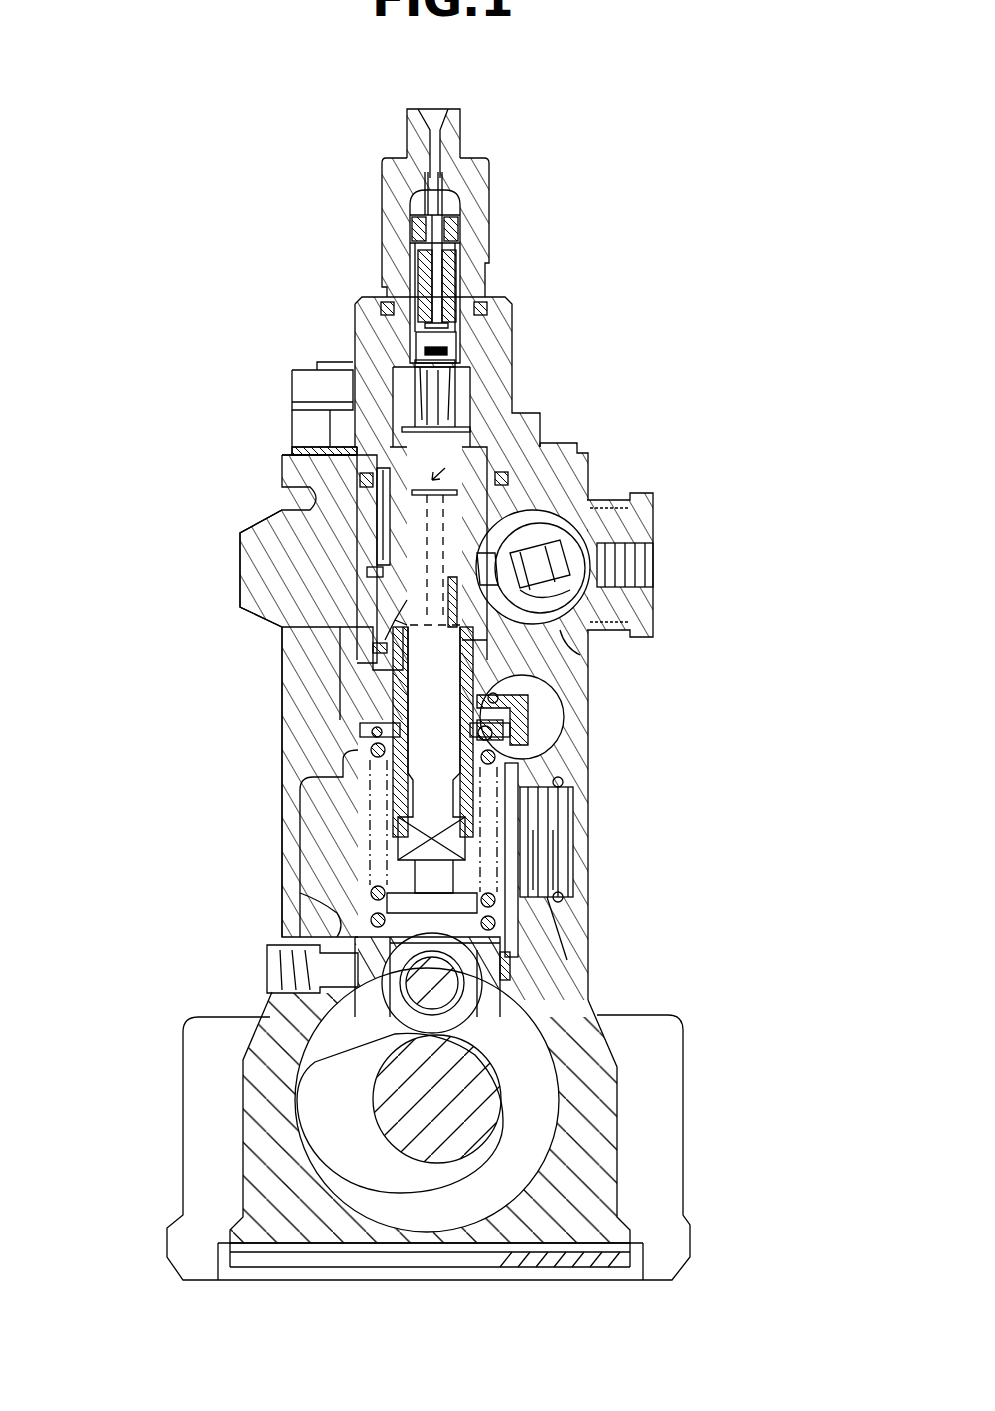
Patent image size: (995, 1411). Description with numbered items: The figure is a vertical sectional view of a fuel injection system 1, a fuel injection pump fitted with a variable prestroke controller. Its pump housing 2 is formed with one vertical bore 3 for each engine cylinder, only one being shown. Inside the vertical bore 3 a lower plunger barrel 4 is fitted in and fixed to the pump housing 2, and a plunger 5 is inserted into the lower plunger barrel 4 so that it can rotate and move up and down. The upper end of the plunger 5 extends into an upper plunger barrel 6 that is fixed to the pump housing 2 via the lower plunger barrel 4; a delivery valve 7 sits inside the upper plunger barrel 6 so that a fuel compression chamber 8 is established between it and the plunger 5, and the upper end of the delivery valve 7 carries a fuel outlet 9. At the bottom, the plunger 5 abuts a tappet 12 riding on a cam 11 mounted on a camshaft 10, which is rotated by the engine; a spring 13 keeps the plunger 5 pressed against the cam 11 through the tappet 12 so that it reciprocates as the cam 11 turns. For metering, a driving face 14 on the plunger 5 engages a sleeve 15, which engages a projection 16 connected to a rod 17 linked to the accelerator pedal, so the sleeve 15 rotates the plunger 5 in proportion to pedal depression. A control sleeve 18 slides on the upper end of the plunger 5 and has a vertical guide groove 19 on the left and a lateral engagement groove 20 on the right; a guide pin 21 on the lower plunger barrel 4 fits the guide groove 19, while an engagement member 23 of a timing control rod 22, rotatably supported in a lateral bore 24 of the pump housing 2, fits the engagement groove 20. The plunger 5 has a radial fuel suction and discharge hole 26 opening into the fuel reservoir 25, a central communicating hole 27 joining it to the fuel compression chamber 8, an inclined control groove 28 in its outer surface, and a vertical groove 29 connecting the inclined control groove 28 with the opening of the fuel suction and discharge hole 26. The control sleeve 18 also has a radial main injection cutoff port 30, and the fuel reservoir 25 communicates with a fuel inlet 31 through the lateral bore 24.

The fuel injection system 1 is at (644, 308).
The pump housing 2 is at (300, 808).
The vertical bore 3 is at (400, 765).
The lower plunger barrel 4 is at (365, 650).
The plunger 5 is at (310, 807).
The upper plunger barrel 6 is at (360, 310).
The delivery valve 7 is at (472, 340).
The fuel compression chamber 8 is at (490, 407).
The fuel outlet 9 is at (466, 140).
The camshaft 10 is at (485, 1085).
The cam 11 is at (322, 1088).
The tappet 12 is at (493, 943).
The spring 13 is at (345, 880).
The driving face 14 is at (570, 860).
The sleeve 15 is at (520, 805).
The projection 16 is at (532, 683).
The rod 17 is at (528, 730).
The control sleeve 18 is at (365, 465).
The guide groove 19 is at (322, 500).
The engagement groove 20 is at (522, 462).
The guide pin 21 is at (370, 575).
The timing control rod 22 is at (586, 496).
The engagement member 23 is at (563, 633).
The lateral bore 24 is at (550, 530).
The fuel reservoir 25 is at (375, 625).
The fuel suction and discharge hole 26 is at (370, 735).
The central communicating hole 27 is at (290, 420).
The inclined control groove 28 is at (400, 693).
The vertical groove 29 is at (415, 590).
The main injection cutoff port 30 is at (245, 526).
The fuel inlet 31 is at (637, 575).